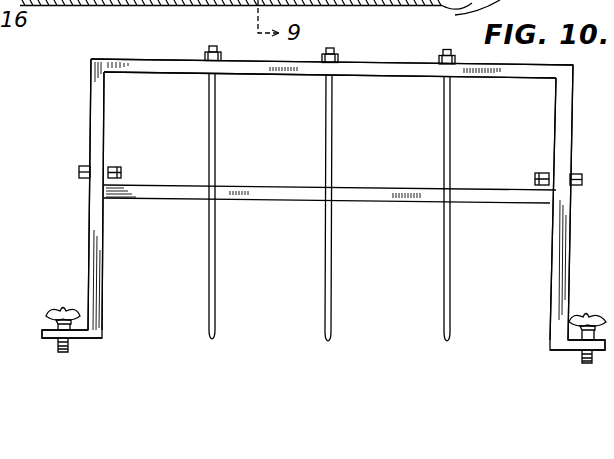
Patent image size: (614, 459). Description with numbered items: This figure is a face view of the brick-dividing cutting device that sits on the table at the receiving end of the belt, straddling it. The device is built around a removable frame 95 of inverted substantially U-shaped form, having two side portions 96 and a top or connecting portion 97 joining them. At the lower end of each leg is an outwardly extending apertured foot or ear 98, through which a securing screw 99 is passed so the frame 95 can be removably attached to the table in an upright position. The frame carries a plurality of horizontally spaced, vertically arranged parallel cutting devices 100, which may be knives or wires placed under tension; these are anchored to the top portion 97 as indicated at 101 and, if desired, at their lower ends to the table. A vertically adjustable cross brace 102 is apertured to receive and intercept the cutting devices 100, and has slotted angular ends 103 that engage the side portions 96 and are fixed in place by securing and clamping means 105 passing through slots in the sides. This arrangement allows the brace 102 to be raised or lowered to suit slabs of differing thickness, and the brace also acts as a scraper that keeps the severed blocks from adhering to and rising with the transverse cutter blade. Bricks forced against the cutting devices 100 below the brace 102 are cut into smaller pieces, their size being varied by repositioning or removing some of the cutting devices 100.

The frame 95 is at (92, 100).
The side portions 96 is at (562, 117).
The top or connecting portion 97 is at (258, 73).
The apertured feet or ears 98 is at (46, 335).
The screws 99 is at (63, 306).
The cutting devices 100 is at (325, 257).
The anchoring points of cutting devices 101 is at (440, 52).
The cross brace 102 is at (247, 190).
The slotted angular ends 103 is at (548, 174).
The securing and clamping means 105 is at (80, 170).